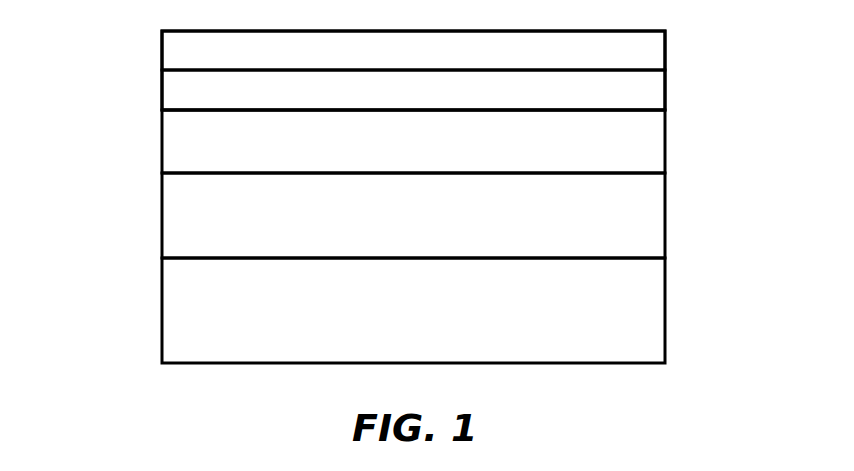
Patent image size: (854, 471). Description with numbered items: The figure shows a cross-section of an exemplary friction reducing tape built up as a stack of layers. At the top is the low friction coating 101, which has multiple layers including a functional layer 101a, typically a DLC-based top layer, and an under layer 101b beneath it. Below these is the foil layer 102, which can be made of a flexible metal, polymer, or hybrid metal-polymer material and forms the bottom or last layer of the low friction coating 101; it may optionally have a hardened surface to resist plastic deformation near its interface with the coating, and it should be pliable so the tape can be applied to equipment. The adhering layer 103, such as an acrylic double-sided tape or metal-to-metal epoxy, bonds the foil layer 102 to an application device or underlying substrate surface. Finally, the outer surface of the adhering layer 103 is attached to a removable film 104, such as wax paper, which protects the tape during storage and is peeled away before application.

The low friction coating 101 is at (672, 31).
The functional layer 101a is at (172, 53).
The under layer 101b is at (172, 92).
The foil layer 102 is at (172, 147).
The adhering layer 103 is at (172, 217).
The removable film 104 is at (172, 315).